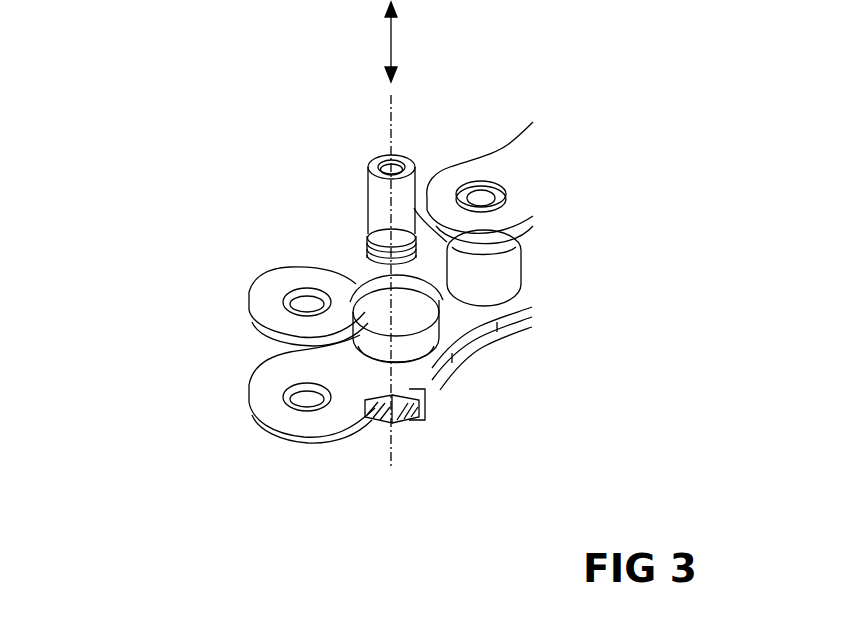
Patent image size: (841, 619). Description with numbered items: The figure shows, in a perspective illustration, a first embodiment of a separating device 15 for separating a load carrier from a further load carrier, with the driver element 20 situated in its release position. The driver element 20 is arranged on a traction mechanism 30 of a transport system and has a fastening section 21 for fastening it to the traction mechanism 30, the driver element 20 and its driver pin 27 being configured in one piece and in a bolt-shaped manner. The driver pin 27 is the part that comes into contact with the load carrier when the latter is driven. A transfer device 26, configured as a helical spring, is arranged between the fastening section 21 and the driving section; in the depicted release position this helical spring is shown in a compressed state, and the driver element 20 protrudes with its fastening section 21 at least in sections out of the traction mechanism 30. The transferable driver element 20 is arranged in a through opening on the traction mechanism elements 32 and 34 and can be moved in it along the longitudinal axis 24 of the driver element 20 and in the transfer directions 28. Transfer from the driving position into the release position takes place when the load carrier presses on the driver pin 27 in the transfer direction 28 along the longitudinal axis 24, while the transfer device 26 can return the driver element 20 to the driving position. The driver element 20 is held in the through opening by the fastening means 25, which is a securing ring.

The separating device 15 is at (108, 80).
The driver element 20 is at (389, 410).
The fastening section 21 is at (425, 403).
The longitudinal axis 24 is at (390, 119).
The fastening means 25 is at (393, 418).
The transfer device 26 is at (351, 250).
The driver pin 27 is at (385, 220).
The transfer direction 28 is at (390, 50).
The traction mechanism 30 is at (474, 350).
The traction mechanism element 32 is at (507, 273).
The traction mechanism element 34 is at (323, 273).